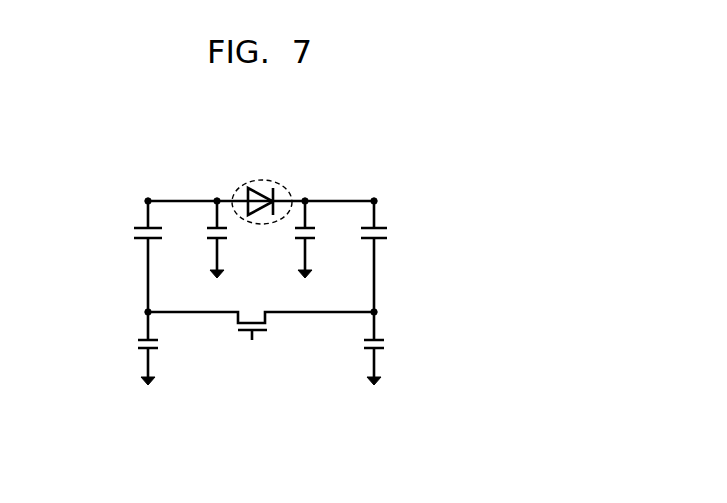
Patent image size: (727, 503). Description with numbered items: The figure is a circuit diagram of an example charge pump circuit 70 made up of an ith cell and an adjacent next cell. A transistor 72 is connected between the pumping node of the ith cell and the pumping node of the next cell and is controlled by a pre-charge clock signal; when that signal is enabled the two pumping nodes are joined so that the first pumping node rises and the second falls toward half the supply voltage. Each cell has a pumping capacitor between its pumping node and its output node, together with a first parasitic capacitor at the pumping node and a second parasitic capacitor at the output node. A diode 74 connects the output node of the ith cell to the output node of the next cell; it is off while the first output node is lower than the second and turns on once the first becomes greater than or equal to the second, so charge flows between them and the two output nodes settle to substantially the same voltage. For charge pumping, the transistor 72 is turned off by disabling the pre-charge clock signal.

The charge pump circuit 70 is at (455, 207).
The transistor 72 is at (252, 313).
The diode 74 is at (263, 180).